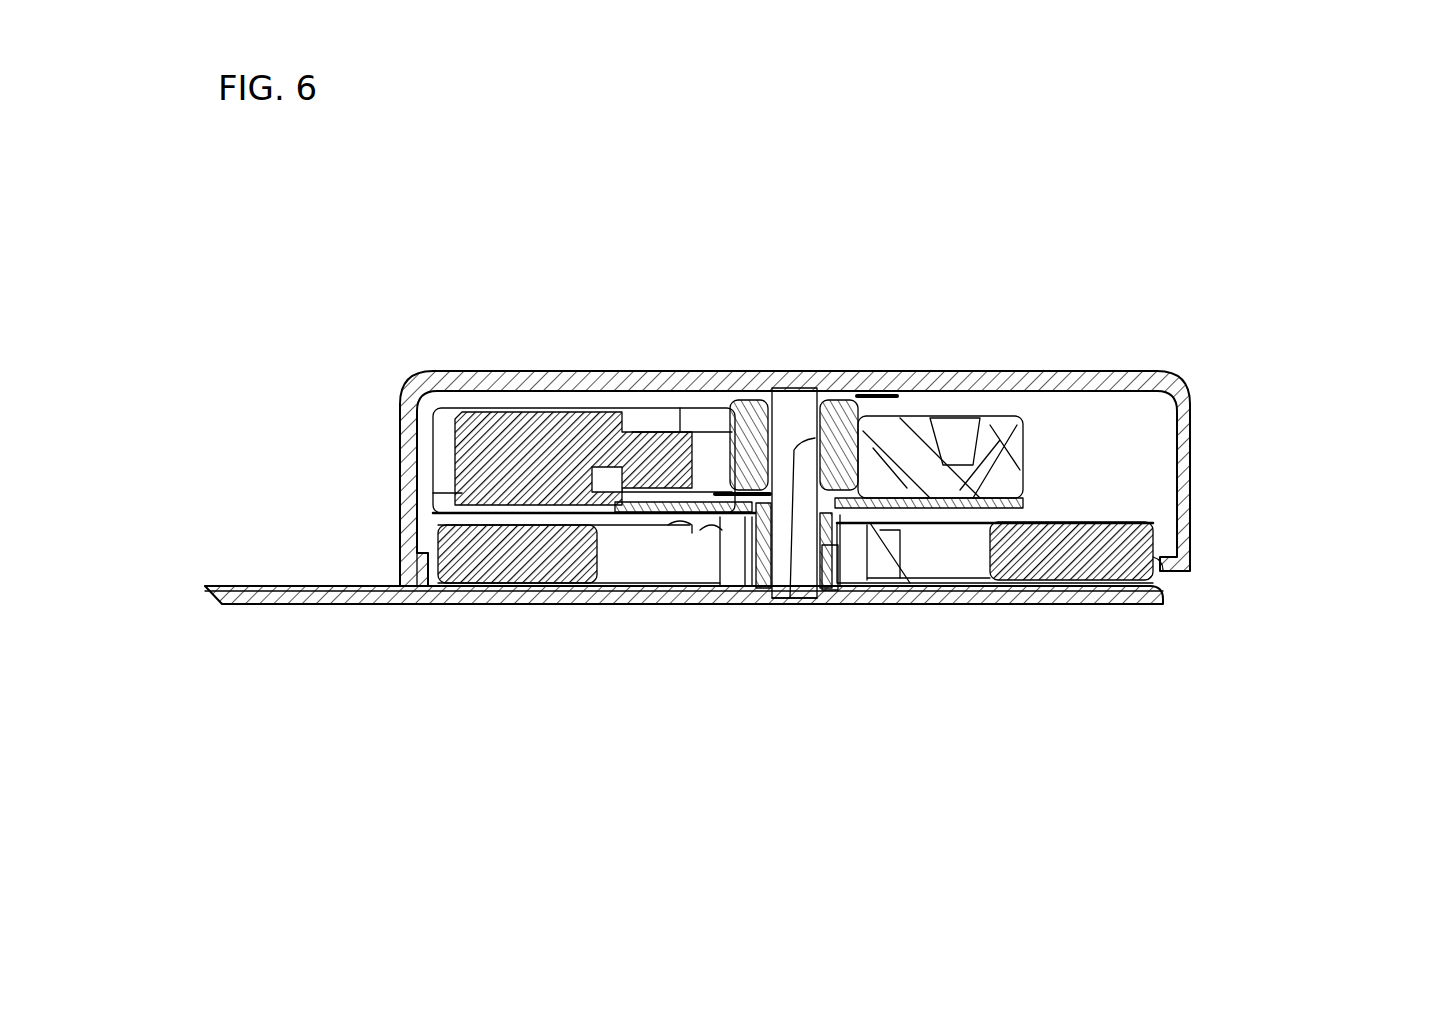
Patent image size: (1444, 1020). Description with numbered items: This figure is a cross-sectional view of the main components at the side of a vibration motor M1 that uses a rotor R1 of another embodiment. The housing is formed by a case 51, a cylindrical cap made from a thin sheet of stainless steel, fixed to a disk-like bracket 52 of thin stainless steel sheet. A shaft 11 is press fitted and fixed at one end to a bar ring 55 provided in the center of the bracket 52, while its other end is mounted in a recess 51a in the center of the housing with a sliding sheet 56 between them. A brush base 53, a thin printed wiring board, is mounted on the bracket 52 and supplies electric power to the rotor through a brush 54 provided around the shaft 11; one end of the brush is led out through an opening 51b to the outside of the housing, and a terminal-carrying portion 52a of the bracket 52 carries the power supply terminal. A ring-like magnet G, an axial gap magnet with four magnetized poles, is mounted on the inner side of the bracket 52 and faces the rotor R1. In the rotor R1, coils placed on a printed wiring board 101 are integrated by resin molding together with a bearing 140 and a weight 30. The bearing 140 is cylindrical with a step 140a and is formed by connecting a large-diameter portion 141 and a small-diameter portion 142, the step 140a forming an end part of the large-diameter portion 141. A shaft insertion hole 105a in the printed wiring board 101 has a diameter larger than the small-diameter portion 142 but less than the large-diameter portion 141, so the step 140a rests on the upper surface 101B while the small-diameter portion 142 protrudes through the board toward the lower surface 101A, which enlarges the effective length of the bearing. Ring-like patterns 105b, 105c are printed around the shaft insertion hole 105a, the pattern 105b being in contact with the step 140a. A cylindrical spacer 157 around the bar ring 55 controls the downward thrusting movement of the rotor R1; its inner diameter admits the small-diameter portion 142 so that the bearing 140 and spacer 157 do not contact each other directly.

The shaft 11 is at (796, 412).
The weight 30 is at (455, 493).
The case 51 is at (1156, 371).
The recess 51a is at (767, 373).
The opening 51b is at (405, 570).
The bracket 52 is at (1168, 600).
The terminal-carrying portion 52a is at (268, 604).
The brush base 53 is at (1042, 565).
The brush 54 is at (688, 520).
The bar ring 55 is at (220, 586).
The sliding sheet 56 is at (875, 371).
The printed wiring board 101 is at (1027, 489).
The lower surface 101A is at (917, 523).
The upper surface 101B is at (1010, 470).
The shaft insertion hole 105a is at (766, 605).
The ring-like pattern 105b is at (898, 418).
The ring-like pattern 105c is at (870, 523).
The bearing 140 is at (690, 455).
The step 140a is at (630, 470).
The large-diameter portion 141 is at (792, 602).
The small-diameter portion 142 is at (825, 600).
The cylindrical spacer 157 is at (713, 548).
The magnet G is at (453, 604).
The vibration motor M1 is at (1163, 220).
The rotor R1 is at (1040, 466).